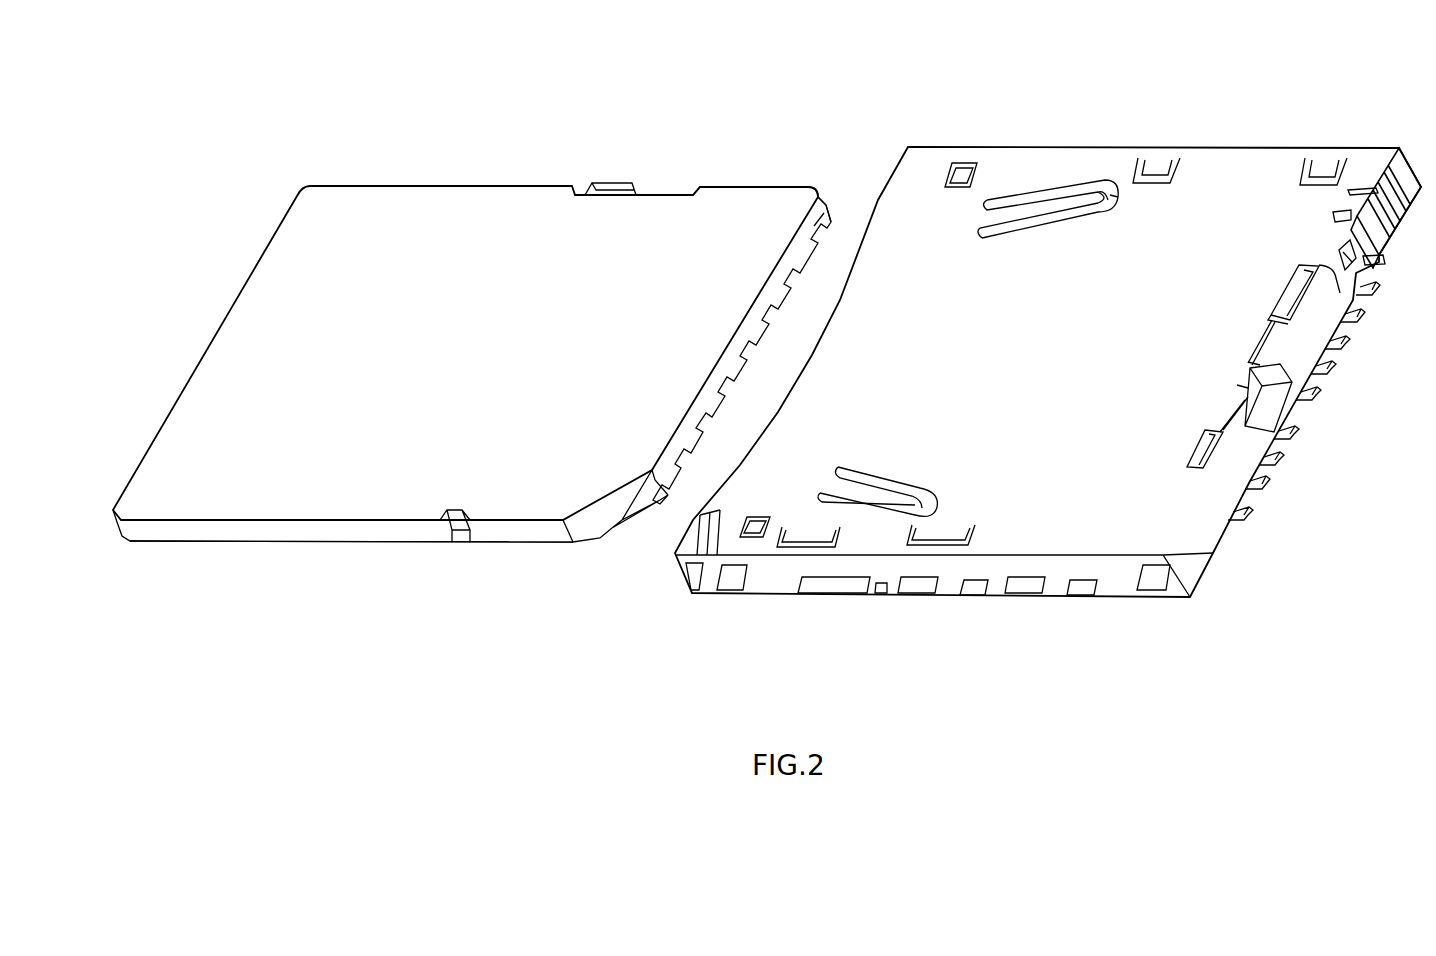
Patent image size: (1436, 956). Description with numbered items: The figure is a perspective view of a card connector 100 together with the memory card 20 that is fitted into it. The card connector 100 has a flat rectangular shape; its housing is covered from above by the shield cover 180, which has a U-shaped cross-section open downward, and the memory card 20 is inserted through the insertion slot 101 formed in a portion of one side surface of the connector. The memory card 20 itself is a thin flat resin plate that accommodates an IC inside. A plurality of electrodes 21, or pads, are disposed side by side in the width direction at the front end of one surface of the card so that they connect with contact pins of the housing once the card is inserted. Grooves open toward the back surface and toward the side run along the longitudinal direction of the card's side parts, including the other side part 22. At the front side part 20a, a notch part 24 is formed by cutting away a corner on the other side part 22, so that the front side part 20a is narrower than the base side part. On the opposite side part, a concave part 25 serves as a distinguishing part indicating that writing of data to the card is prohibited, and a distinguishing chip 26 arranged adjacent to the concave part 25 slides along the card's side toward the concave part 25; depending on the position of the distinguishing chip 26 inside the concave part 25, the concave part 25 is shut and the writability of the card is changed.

The memory card 20 is at (485, 365).
The front side part 20a is at (818, 205).
The electrodes 21 is at (760, 335).
The other side part 22 is at (373, 527).
The notch part 24 is at (622, 505).
The concave part 25 is at (690, 192).
The distinguishing chip 26 is at (610, 186).
The card connector 100 is at (1048, 339).
The insertion slot 101 is at (683, 580).
The shield cover 180 is at (1265, 165).